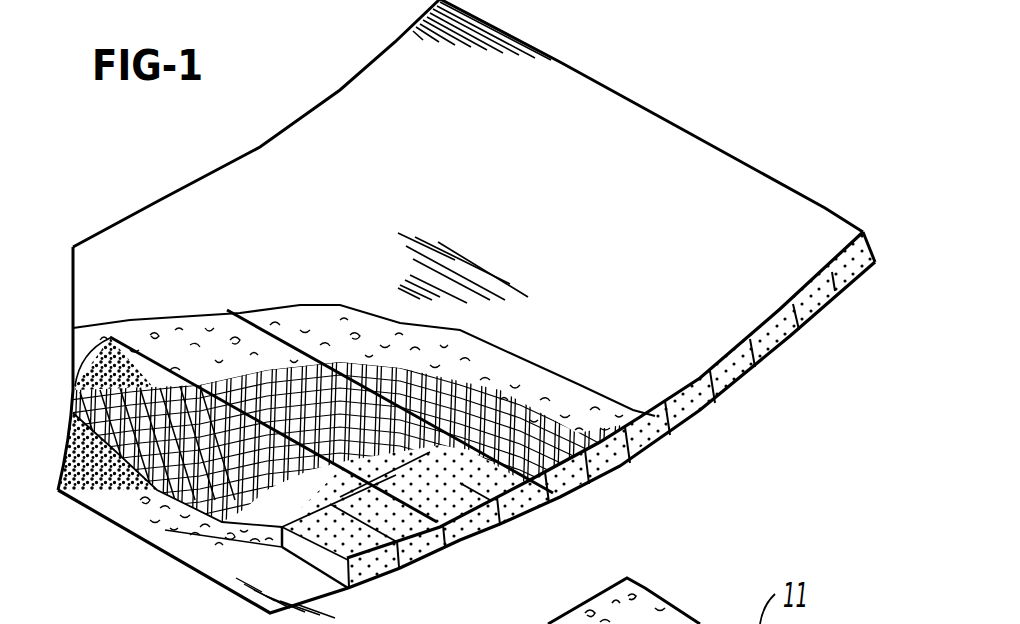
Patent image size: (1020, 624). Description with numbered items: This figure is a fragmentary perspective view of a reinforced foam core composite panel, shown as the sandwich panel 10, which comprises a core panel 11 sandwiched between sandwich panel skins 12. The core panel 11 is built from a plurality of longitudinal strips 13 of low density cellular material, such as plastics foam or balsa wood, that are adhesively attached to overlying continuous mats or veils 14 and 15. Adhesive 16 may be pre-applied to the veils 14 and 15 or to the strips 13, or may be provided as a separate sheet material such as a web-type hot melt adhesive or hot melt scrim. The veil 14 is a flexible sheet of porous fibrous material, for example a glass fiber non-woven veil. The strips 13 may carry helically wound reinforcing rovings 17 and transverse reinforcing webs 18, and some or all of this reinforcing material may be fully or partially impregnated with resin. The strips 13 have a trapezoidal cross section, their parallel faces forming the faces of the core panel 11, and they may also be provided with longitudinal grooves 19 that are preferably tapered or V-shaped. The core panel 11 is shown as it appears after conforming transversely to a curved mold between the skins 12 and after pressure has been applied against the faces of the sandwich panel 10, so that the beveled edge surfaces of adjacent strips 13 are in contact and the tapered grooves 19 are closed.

The sandwich panel 10 is at (654, 90).
The core panel 11 is at (62, 344).
The sandwich panel skins 12 is at (80, 258).
The longitudinal strips 13 is at (738, 398).
The veil 14 is at (606, 403).
The veil 15 is at (131, 536).
The adhesive 16 is at (115, 362).
The helically wound reinforcing rovings 17 is at (73, 417).
The transverse reinforcing webs 18 is at (234, 573).
The longitudinal grooves 19 is at (485, 508).